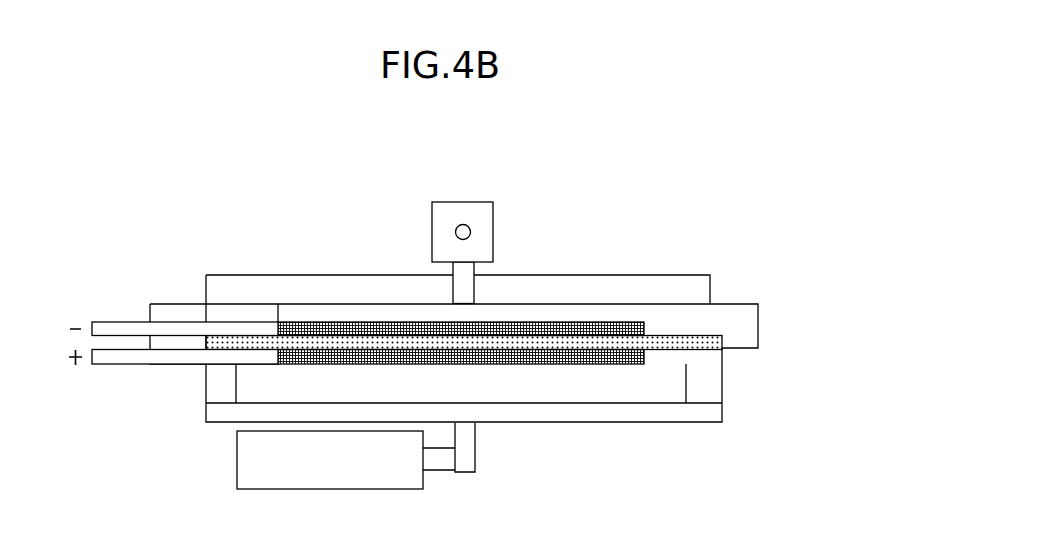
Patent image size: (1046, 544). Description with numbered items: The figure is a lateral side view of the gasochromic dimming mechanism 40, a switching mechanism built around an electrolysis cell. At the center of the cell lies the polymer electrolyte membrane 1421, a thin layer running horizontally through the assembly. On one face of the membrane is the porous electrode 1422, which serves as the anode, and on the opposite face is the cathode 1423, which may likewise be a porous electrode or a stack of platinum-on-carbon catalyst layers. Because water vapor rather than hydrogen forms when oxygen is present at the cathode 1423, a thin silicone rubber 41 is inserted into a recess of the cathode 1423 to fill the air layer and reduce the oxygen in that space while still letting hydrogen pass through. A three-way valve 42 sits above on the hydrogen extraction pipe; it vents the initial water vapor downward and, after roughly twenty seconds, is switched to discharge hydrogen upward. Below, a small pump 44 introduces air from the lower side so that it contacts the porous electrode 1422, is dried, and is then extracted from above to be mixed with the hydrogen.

The gasochromic dimming mechanism 40 is at (778, 189).
The silicone rubber 41 is at (637, 313).
The three-way valve 42 is at (494, 231).
The small pump 44 is at (236, 458).
The polymer electrolyte membrane 1421 is at (716, 342).
The porous electrode 1422 is at (637, 355).
The cathode 1423 is at (637, 327).